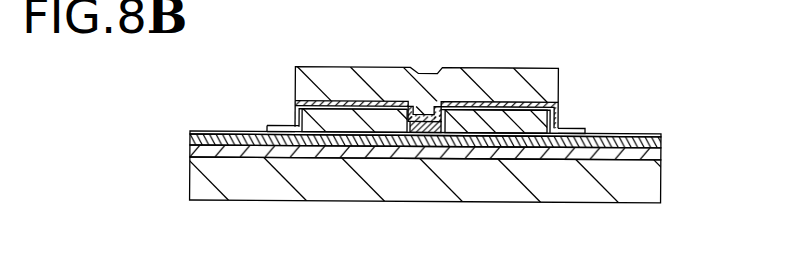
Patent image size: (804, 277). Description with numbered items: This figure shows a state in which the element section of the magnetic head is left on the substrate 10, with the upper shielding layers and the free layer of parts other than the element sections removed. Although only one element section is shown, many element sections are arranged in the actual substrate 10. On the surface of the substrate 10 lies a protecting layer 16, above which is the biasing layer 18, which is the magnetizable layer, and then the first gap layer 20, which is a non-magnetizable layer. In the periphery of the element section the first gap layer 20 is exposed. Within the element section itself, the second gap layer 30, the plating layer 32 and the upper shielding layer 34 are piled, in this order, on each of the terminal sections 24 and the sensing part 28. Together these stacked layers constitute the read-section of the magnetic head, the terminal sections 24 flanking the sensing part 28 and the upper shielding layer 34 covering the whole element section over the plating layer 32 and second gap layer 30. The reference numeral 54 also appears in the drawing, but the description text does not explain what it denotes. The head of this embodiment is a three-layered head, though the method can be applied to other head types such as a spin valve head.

The substrate 10 is at (547, 193).
The protecting layer 16 is at (661, 151).
The biasing layer 18 is at (661, 139).
The first gap layer 20 is at (661, 130).
The terminal section 24 is at (355, 119).
The sensing part 28 is at (427, 121).
The second gap layer 30 is at (553, 118).
The plating layer 32 is at (558, 99).
The upper shielding layer 34 is at (499, 81).
The wiring layer 54 is at (330, 7).